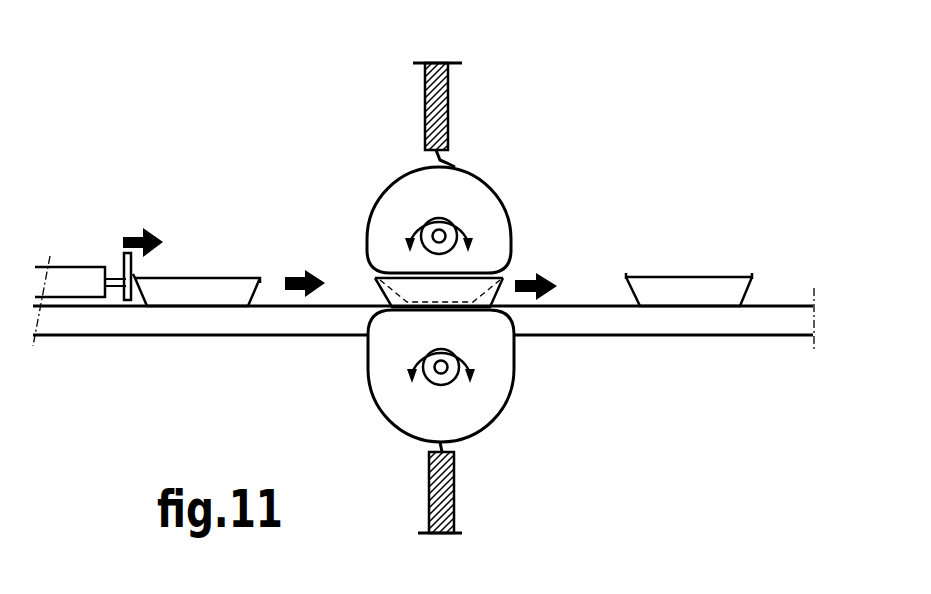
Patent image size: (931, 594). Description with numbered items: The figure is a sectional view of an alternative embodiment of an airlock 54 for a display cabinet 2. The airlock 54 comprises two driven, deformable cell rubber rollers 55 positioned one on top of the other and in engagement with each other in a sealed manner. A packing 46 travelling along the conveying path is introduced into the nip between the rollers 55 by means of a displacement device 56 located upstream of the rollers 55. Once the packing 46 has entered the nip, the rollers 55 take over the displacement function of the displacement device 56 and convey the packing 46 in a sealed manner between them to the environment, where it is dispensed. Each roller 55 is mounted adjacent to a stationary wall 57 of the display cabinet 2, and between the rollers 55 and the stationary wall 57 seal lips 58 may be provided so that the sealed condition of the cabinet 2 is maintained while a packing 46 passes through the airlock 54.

The display cabinet 2 is at (220, 70).
The packing 46 is at (197, 295).
The airlock 54 is at (378, 186).
The rollers 55 is at (480, 207).
The displacement device 56 is at (80, 278).
The stationary wall 57 is at (447, 103).
The seal lips 58 is at (463, 168).